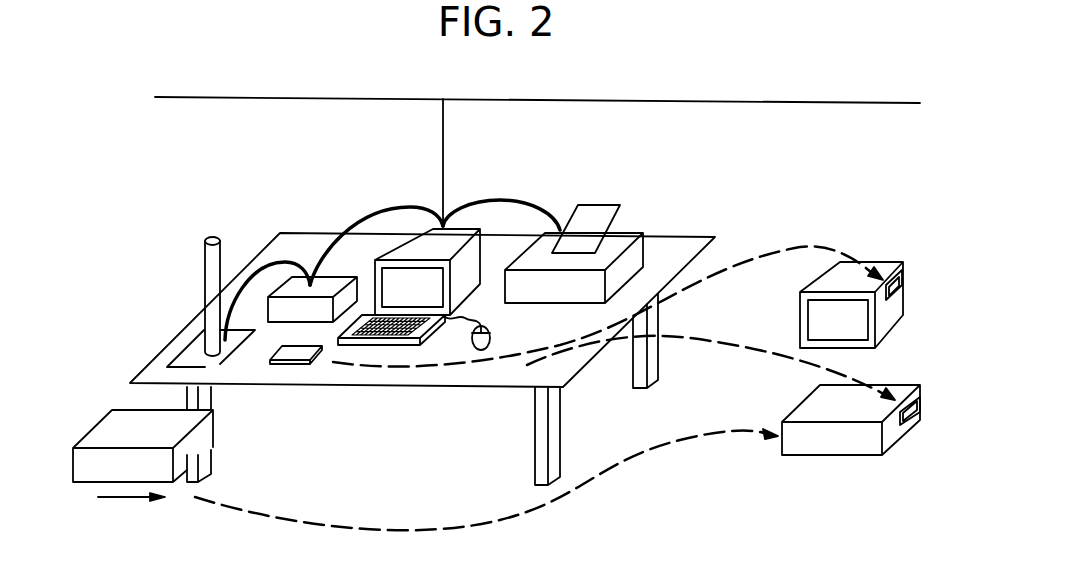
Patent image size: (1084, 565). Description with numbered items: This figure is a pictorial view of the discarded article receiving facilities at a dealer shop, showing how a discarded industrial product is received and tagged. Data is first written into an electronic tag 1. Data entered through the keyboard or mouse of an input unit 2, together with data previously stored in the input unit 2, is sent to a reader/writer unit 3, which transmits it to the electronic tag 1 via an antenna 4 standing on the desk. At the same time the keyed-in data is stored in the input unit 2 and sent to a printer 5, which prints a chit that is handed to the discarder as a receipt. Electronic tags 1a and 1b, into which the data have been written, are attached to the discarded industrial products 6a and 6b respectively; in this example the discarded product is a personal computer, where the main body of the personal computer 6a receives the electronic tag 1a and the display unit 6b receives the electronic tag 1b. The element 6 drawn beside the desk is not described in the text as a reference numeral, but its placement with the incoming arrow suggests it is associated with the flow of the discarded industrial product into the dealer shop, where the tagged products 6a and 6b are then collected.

The electronic tag 1 is at (744, 100).
The electronic tag 1a is at (917, 420).
The electronic tag 1b is at (903, 286).
The input unit 2 is at (465, 258).
The reader/writer unit 3 is at (328, 286).
The antenna 4 is at (208, 258).
The printer 5 is at (618, 240).
The card issuing device 6 is at (112, 430).
The main body of the personal computer 6a is at (898, 393).
The display unit 6b is at (878, 270).